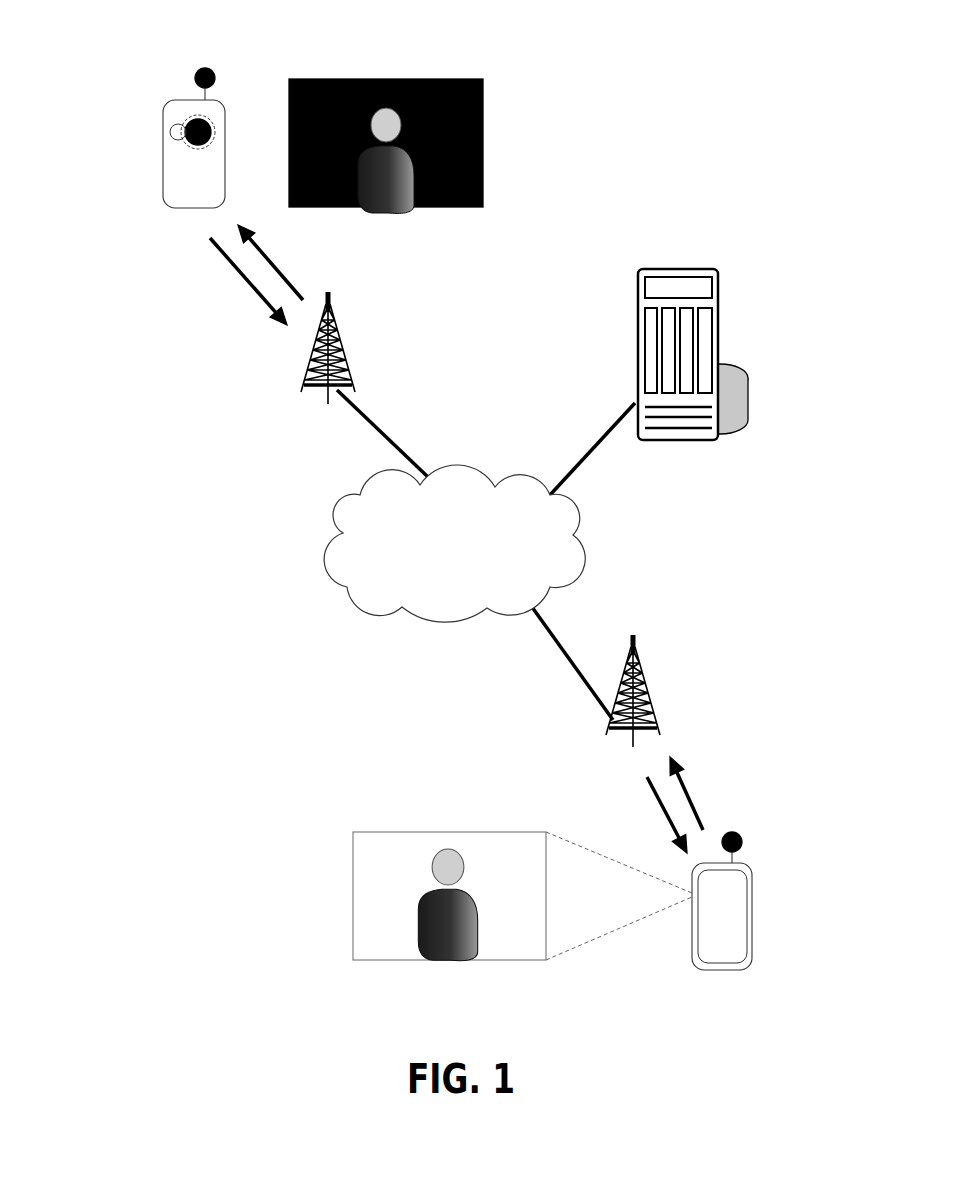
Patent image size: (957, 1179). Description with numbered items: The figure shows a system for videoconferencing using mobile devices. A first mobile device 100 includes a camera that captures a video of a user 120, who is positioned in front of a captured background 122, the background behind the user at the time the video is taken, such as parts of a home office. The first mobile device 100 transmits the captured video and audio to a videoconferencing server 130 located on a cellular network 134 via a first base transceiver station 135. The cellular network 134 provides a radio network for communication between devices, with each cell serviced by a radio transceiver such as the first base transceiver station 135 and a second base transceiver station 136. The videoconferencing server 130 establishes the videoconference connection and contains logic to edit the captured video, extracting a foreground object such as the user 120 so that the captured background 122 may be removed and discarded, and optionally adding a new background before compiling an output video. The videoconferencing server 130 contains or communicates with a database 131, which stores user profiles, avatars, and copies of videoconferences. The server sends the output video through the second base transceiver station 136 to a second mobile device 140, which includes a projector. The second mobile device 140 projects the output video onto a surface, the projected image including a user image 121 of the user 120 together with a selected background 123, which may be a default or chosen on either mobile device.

The first mobile device 100 is at (190, 97).
The user 120 is at (408, 212).
The user image 121 is at (467, 953).
The captured background 122 is at (483, 80).
The selected background 123 is at (365, 847).
The videoconferencing server 130 is at (697, 272).
The database 131 is at (733, 362).
The cellular network 134 is at (357, 610).
The first base transceiver station 135 is at (342, 353).
The second base transceiver station 136 is at (642, 673).
The second mobile device 140 is at (720, 967).